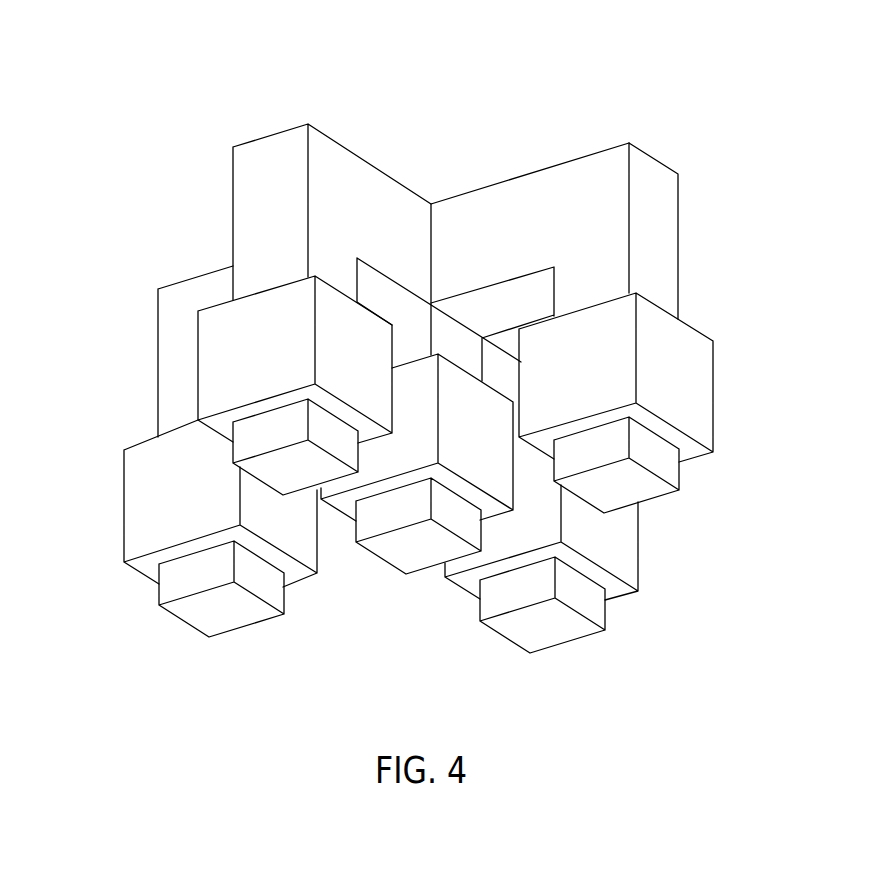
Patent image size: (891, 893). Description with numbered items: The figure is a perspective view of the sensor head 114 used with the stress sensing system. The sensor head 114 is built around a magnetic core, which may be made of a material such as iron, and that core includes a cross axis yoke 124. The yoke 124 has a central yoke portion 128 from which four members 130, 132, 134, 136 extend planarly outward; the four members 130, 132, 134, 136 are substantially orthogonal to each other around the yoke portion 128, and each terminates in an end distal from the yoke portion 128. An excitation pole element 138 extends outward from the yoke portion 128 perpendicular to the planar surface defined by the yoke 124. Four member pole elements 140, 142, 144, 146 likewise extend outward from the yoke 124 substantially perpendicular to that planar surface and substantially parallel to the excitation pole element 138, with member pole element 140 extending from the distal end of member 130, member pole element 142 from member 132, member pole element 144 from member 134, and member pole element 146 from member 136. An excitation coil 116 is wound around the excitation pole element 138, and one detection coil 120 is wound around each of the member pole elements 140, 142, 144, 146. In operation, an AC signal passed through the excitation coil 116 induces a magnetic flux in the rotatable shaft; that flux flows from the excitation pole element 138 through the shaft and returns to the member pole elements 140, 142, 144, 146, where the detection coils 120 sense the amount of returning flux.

The sensor head 114 is at (798, 80).
The excitation coil 116 is at (493, 470).
The detection coil 120 is at (124, 484).
The cross axis yoke 124 is at (463, 213).
The yoke portion 128 is at (428, 202).
The member 130 is at (175, 283).
The member 132 is at (497, 348).
The member 134 is at (653, 158).
The member 136 is at (272, 135).
The excitation pole element 138 is at (405, 555).
The member pole element 140 is at (225, 615).
The member pole element 142 is at (548, 633).
The member pole element 144 is at (643, 489).
The member pole element 146 is at (278, 475).